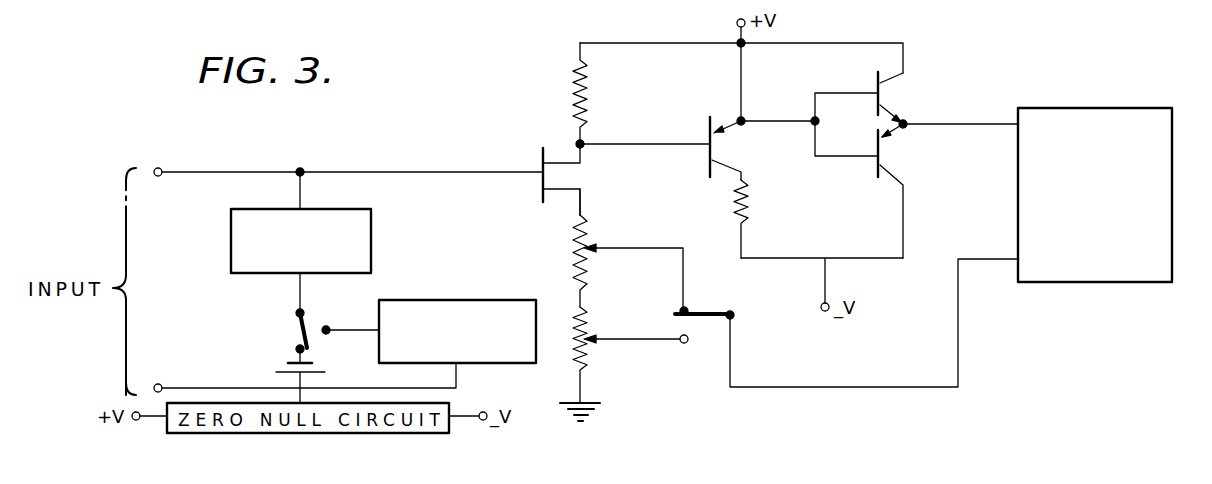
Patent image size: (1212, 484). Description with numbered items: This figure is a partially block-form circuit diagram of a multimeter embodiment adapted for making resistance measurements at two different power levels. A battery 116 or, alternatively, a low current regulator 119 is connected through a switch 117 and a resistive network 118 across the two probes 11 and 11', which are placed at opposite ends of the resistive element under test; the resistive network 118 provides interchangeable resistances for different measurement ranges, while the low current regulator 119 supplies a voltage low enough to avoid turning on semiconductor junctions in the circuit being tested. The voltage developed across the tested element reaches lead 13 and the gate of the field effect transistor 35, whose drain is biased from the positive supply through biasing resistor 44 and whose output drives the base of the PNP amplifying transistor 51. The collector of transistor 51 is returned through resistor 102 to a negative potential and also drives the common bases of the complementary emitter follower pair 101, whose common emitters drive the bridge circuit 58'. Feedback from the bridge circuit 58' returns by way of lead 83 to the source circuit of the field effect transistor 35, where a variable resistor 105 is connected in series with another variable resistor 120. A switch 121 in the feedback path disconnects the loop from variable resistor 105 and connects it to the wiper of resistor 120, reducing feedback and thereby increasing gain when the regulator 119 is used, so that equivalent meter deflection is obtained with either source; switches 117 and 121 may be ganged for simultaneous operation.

The probe 11 is at (160, 154).
The probe 11' is at (174, 370).
The lead 13 is at (208, 172).
The field effect transistor 35 is at (532, 152).
The biasing resistor 44 is at (592, 100).
The amplifying transistor 51 is at (701, 159).
The bridge circuit 58' is at (1095, 177).
The lead 83 is at (583, 210).
The complementary emitter follower pair 101 is at (851, 173).
The resistor 102 is at (755, 196).
The variable resistor 105 is at (592, 231).
The battery 116 is at (290, 339).
The switch 117 is at (313, 322).
The resistive network 118 is at (372, 240).
The low current regulator 119 is at (498, 363).
The variable resistor 120 is at (585, 322).
The switch 121 is at (708, 312).